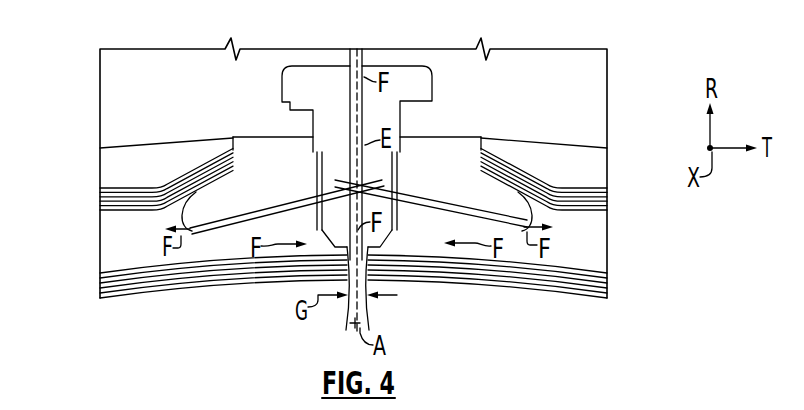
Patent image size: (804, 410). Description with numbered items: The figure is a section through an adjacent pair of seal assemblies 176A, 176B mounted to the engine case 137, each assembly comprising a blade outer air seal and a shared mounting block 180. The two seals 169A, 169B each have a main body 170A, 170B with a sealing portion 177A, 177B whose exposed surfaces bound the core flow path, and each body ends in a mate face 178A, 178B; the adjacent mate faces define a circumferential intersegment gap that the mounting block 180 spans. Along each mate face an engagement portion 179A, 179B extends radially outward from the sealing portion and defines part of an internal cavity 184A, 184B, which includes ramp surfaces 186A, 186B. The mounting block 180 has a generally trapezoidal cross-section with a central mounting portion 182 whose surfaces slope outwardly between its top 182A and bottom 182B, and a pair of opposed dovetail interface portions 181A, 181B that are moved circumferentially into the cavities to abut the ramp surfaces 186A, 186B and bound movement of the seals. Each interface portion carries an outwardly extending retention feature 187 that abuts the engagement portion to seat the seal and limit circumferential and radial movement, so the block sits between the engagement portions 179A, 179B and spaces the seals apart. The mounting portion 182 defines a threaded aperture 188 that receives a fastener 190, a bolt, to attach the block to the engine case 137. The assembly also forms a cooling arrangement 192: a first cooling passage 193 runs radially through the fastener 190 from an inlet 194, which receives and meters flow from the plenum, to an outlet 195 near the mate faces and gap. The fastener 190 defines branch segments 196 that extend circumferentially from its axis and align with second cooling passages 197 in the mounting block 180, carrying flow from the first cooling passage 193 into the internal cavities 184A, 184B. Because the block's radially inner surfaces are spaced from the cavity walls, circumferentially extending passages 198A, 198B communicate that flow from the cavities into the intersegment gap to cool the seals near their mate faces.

The engine case 137 is at (113, 112).
The first seal 169A is at (156, 171).
The second seal 169B is at (496, 176).
The main body of first seal 170A is at (113, 223).
The main body of second seal 170B is at (595, 248).
The first seal assembly 176A is at (118, 138).
The second seal assembly 176B is at (612, 137).
The sealing portion of first seal 177A is at (161, 293).
The sealing portion of second seal 177B is at (483, 283).
The first mate face 178A is at (346, 305).
The second mate face 178B is at (370, 307).
The engagement portion of first seal 179A is at (230, 135).
The engagement portion of second seal 179B is at (521, 86).
The mounting block 180 is at (236, 126).
The first interface portion 181A is at (194, 196).
The second interface portion 181B is at (594, 160).
The mounting portion 182 is at (270, 122).
The top of mounting portion 182A is at (254, 136).
The bottom of mounting portion 182B is at (243, 236).
The internal cavity of first seal 184A is at (110, 242).
The internal cavity of second seal 184B is at (592, 233).
The ramp surface of first seal 186A is at (191, 178).
The ramp surface of second seal 186B is at (520, 152).
The retention feature 187 is at (233, 142).
The aperture 188 is at (317, 173).
The fastener 190 is at (413, 66).
The cooling arrangement 192 is at (433, 58).
The first cooling passage 193 is at (365, 118).
The inlet 194 is at (358, 82).
The outlet 195 is at (366, 251).
The branch segments 196 is at (372, 194).
The second cooling passages 197 is at (217, 220).
The first circumferentially extending passage 198A is at (278, 258).
The second circumferentially extending passage 198B is at (463, 258).